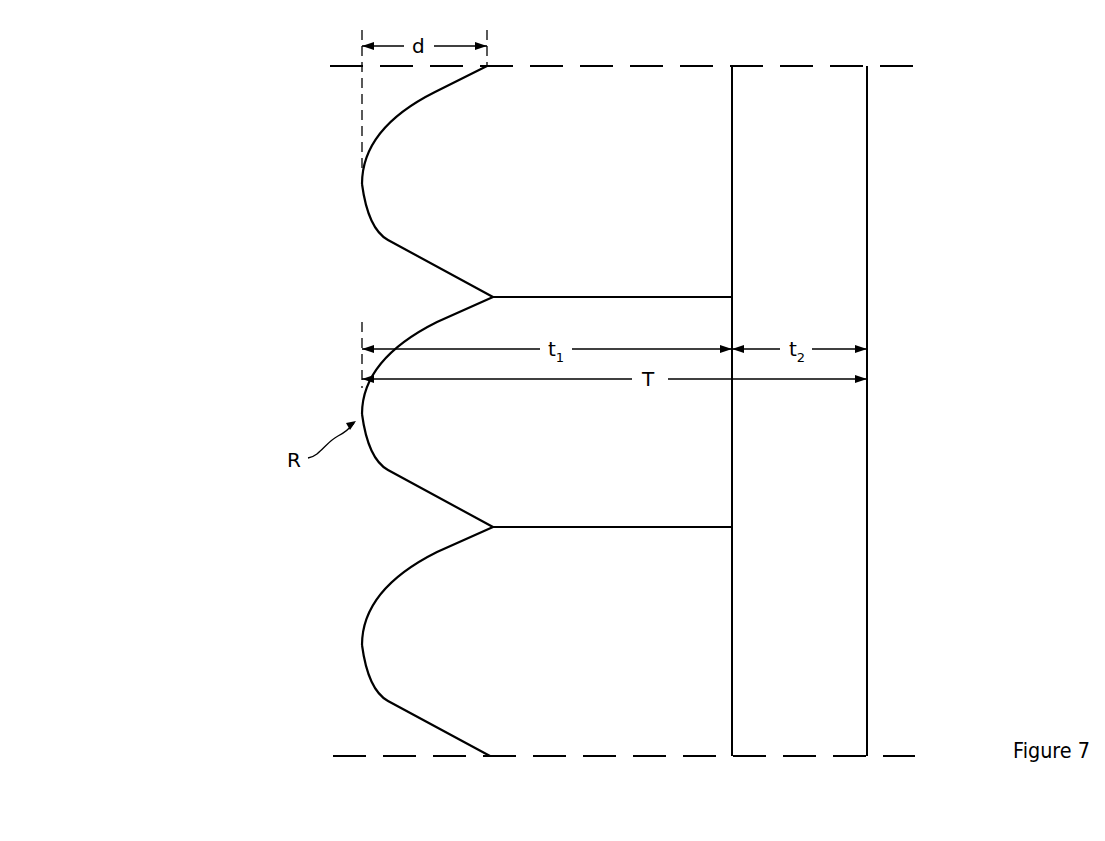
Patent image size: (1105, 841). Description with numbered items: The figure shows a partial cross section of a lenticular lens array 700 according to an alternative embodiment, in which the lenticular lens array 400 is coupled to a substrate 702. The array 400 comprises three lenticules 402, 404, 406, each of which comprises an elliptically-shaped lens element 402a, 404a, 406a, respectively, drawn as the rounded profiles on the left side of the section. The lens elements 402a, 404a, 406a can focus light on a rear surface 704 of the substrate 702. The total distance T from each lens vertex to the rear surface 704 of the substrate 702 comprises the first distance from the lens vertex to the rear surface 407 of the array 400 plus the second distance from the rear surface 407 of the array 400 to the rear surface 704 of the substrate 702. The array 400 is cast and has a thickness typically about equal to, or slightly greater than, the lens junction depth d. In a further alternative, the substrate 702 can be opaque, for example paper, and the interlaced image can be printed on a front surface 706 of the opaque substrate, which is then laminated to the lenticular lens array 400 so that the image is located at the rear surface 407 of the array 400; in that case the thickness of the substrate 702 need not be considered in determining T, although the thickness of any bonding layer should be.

The lenticular lens array 400 is at (312, 108).
The lenticule 402 is at (367, 160).
The elliptically-shaped lens element 402a is at (384, 229).
The lenticule 404 is at (427, 452).
The elliptically-shaped lens element 404a is at (438, 503).
The lenticule 406 is at (425, 630).
The elliptically-shaped lens element 406a is at (402, 710).
The rear surface of the array 407 is at (727, 148).
The lenticular lens array 700 is at (724, 29).
The substrate 702 is at (835, 163).
The rear surface of the substrate 704 is at (863, 241).
The front surface of the opaque substrate 706 is at (736, 487).